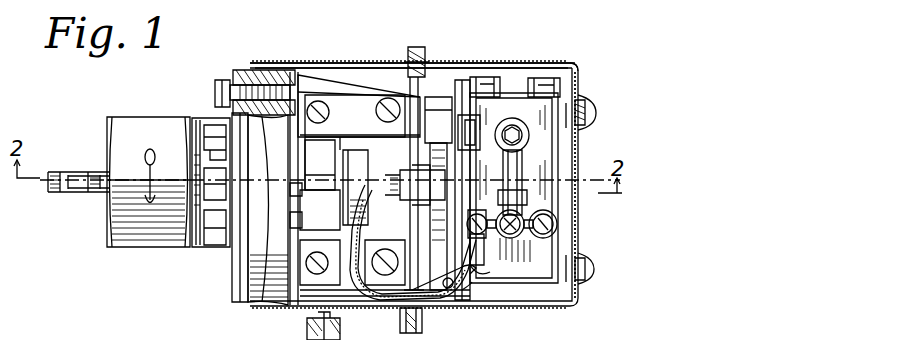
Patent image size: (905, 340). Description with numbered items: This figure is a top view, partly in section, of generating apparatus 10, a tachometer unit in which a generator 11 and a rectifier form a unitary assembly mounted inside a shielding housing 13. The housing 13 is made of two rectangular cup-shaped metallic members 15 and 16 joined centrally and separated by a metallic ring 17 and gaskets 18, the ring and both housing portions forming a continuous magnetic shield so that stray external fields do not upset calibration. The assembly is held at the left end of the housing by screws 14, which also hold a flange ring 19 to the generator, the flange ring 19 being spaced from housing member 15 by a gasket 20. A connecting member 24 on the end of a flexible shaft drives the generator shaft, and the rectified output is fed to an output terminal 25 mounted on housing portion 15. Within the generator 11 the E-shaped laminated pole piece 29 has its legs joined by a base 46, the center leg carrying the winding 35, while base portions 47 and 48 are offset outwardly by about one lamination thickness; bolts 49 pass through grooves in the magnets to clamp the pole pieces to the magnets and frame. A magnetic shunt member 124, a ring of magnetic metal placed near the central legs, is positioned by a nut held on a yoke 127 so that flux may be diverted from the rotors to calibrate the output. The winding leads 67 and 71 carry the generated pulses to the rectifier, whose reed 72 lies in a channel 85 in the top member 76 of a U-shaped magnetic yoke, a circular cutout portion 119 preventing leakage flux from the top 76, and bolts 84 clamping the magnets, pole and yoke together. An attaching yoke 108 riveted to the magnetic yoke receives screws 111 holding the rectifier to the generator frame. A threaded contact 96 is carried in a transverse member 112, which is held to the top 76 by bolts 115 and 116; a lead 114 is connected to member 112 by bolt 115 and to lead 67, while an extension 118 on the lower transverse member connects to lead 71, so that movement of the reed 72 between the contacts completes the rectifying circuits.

The generating apparatus 10 is at (620, 65).
The generator 11 is at (333, 66).
The shielding housing 13 is at (588, 48).
The screws 14 is at (215, 85).
The housing member 15 is at (366, 62).
The housing member 16 is at (538, 68).
The metallic ring 17 is at (417, 46).
The gaskets 18 is at (410, 70).
The flange ring 19 is at (206, 247).
The gasket 20 is at (250, 72).
The connecting member 24 is at (60, 192).
The output terminal 25 is at (307, 325).
The pole piece 29 is at (345, 95).
The winding 35 is at (365, 181).
The base 46 is at (292, 190).
The offset portion 47 is at (330, 166).
The offset portion 48 is at (300, 220).
The bolts 49 is at (310, 95).
The lead 67 is at (392, 300).
The lead 71 is at (424, 310).
The reed 72 is at (513, 170).
The top member 76 is at (560, 107).
The bolts 84 is at (571, 300).
The channel 85 is at (522, 185).
The contact 96 is at (520, 208).
The attaching yoke 108 is at (457, 115).
The screws 111 is at (487, 120).
The transverse member 112 is at (540, 240).
The lead 114 is at (482, 258).
The bolt 115 is at (484, 237).
The bolt 116 is at (540, 226).
The extension 118 is at (455, 300).
The circular cutout portion 119 is at (520, 195).
The magnetic shunt member 124 is at (470, 117).
The yoke 127 is at (398, 145).